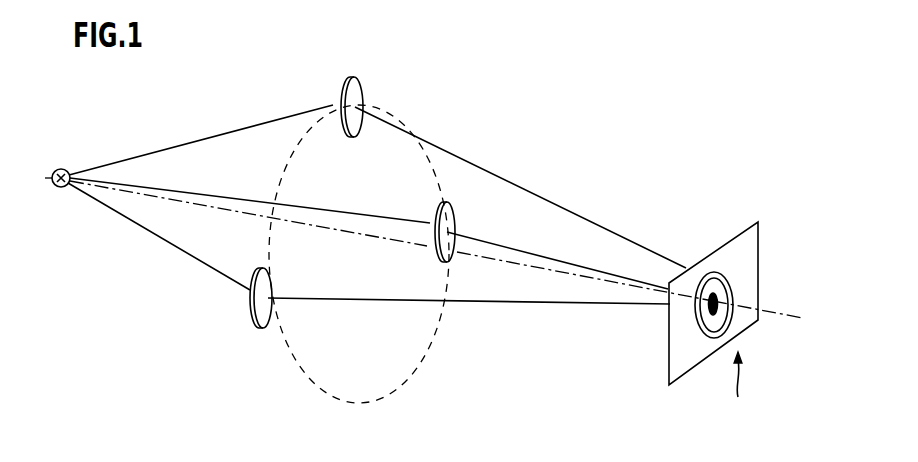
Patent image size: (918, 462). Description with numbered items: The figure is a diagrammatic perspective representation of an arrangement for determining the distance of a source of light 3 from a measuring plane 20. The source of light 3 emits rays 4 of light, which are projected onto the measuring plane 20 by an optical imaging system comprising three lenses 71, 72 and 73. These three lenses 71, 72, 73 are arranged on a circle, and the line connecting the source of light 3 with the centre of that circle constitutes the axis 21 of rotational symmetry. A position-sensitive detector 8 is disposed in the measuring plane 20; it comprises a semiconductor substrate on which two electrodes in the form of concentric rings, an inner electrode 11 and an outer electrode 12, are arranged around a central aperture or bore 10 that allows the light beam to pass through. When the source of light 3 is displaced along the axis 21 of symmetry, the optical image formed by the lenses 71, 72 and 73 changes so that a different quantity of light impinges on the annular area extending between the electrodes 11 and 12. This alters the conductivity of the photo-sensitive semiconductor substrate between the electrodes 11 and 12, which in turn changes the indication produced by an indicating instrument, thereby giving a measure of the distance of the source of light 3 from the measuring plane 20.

The source of light 3 is at (64, 188).
The rays of light 4 is at (198, 140).
The lens 71 is at (358, 79).
The lens 72 is at (457, 222).
The lens 73 is at (250, 324).
The measuring plane 20 is at (758, 228).
The outer electrode 12 is at (731, 288).
The inner electrode 11 is at (723, 307).
The central aperture or bore 10 is at (712, 315).
The axis of rotational symmetry 21 is at (788, 319).
The position-sensitive detector 8 is at (738, 390).